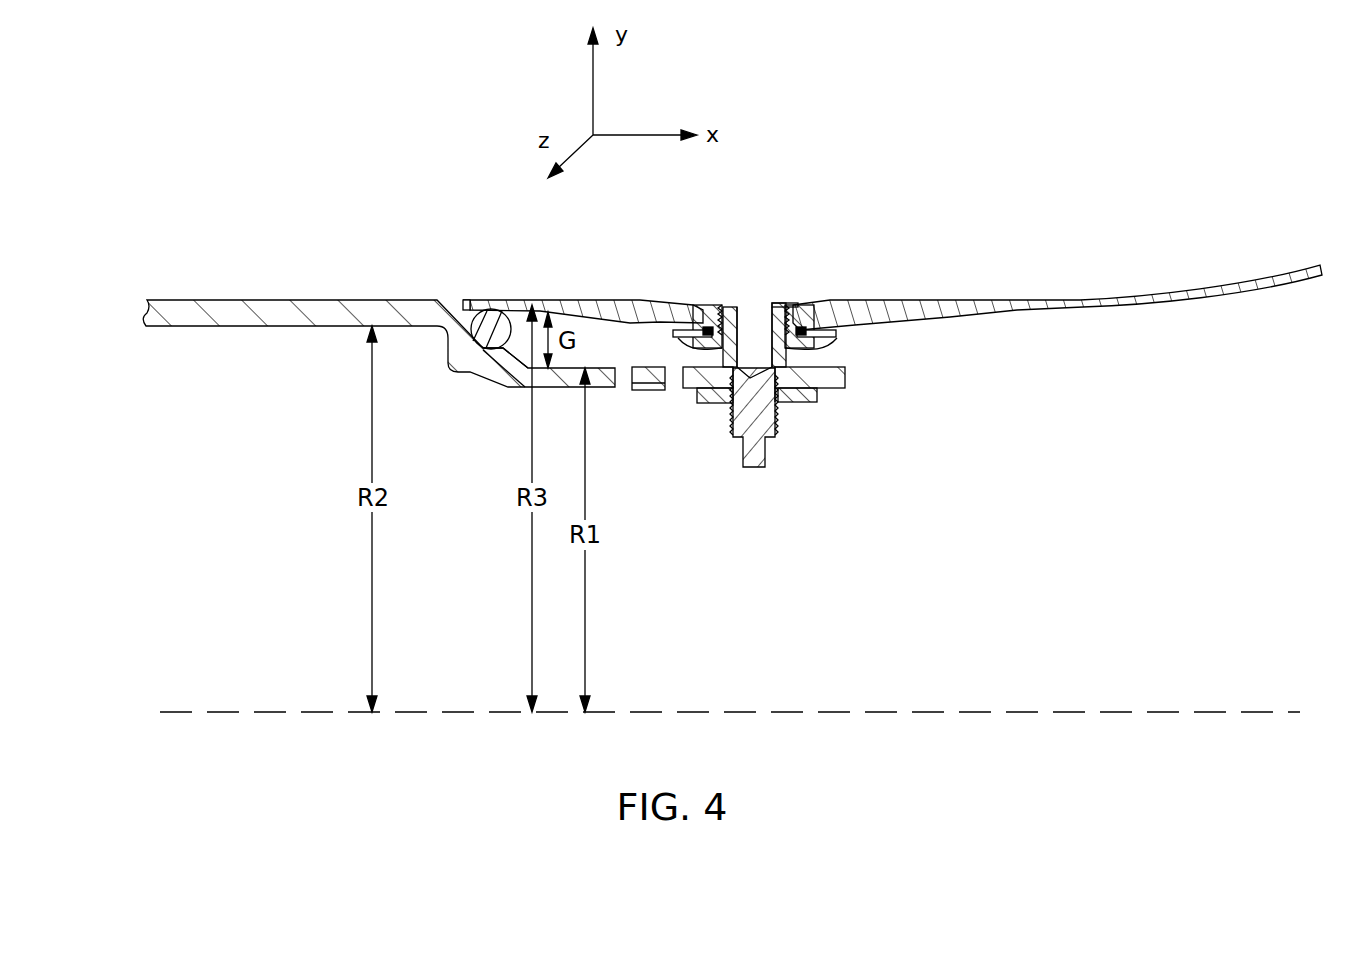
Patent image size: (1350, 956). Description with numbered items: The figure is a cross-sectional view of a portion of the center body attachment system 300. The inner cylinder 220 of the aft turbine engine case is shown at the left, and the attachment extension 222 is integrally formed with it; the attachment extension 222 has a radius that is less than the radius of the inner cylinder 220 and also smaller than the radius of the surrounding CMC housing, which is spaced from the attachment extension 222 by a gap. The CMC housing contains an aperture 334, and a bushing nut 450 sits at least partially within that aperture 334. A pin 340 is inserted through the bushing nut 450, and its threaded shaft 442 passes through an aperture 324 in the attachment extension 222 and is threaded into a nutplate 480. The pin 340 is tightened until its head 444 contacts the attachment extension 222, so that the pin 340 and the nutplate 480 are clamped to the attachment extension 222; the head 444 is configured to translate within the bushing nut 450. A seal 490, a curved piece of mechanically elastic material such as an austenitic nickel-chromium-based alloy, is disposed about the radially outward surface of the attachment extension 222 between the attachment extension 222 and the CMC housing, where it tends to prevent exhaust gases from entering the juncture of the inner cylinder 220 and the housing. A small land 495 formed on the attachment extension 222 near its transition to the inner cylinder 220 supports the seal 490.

The center body attachment system 300 is at (960, 159).
The inner cylinder 220 is at (338, 328).
The attachment extension 222 is at (850, 395).
The aperture 334 is at (785, 282).
The pin 340 is at (752, 468).
The aperture 324 is at (786, 400).
The threaded shaft 442 is at (732, 410).
The head 444 is at (736, 308).
The bushing nut 450 is at (812, 336).
The nutplate 480 is at (805, 396).
The seal 490 is at (482, 310).
The small land 495 is at (480, 370).